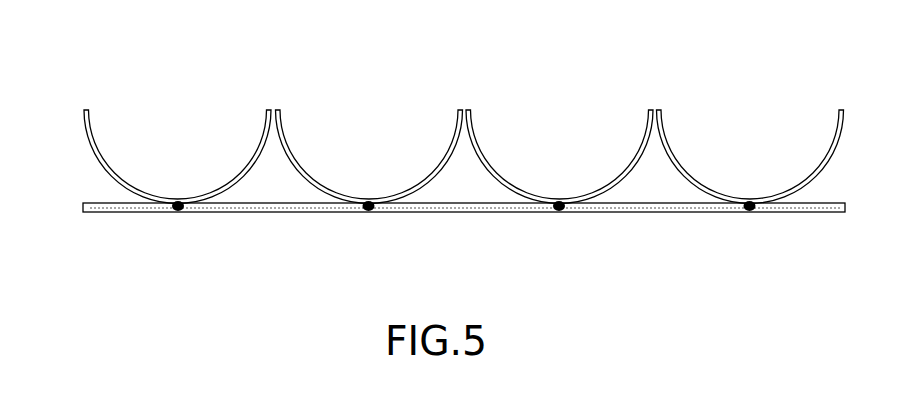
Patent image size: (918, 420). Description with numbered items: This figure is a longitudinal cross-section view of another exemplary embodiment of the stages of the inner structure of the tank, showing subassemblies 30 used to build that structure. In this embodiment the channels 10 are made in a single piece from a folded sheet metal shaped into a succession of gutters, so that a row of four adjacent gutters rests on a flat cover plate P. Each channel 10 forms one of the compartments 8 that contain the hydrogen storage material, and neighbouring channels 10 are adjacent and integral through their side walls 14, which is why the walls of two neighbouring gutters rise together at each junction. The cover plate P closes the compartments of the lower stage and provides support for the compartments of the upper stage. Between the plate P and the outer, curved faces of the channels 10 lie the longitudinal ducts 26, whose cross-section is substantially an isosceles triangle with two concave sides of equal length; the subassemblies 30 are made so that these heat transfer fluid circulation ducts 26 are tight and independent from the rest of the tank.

The compartments 8 is at (238, 108).
The channels 10 is at (89, 161).
The side walls 14 is at (245, 173).
The longitudinal ducts 26 is at (460, 173).
The cover plate P is at (512, 208).
The subassemblies 30 is at (671, 226).